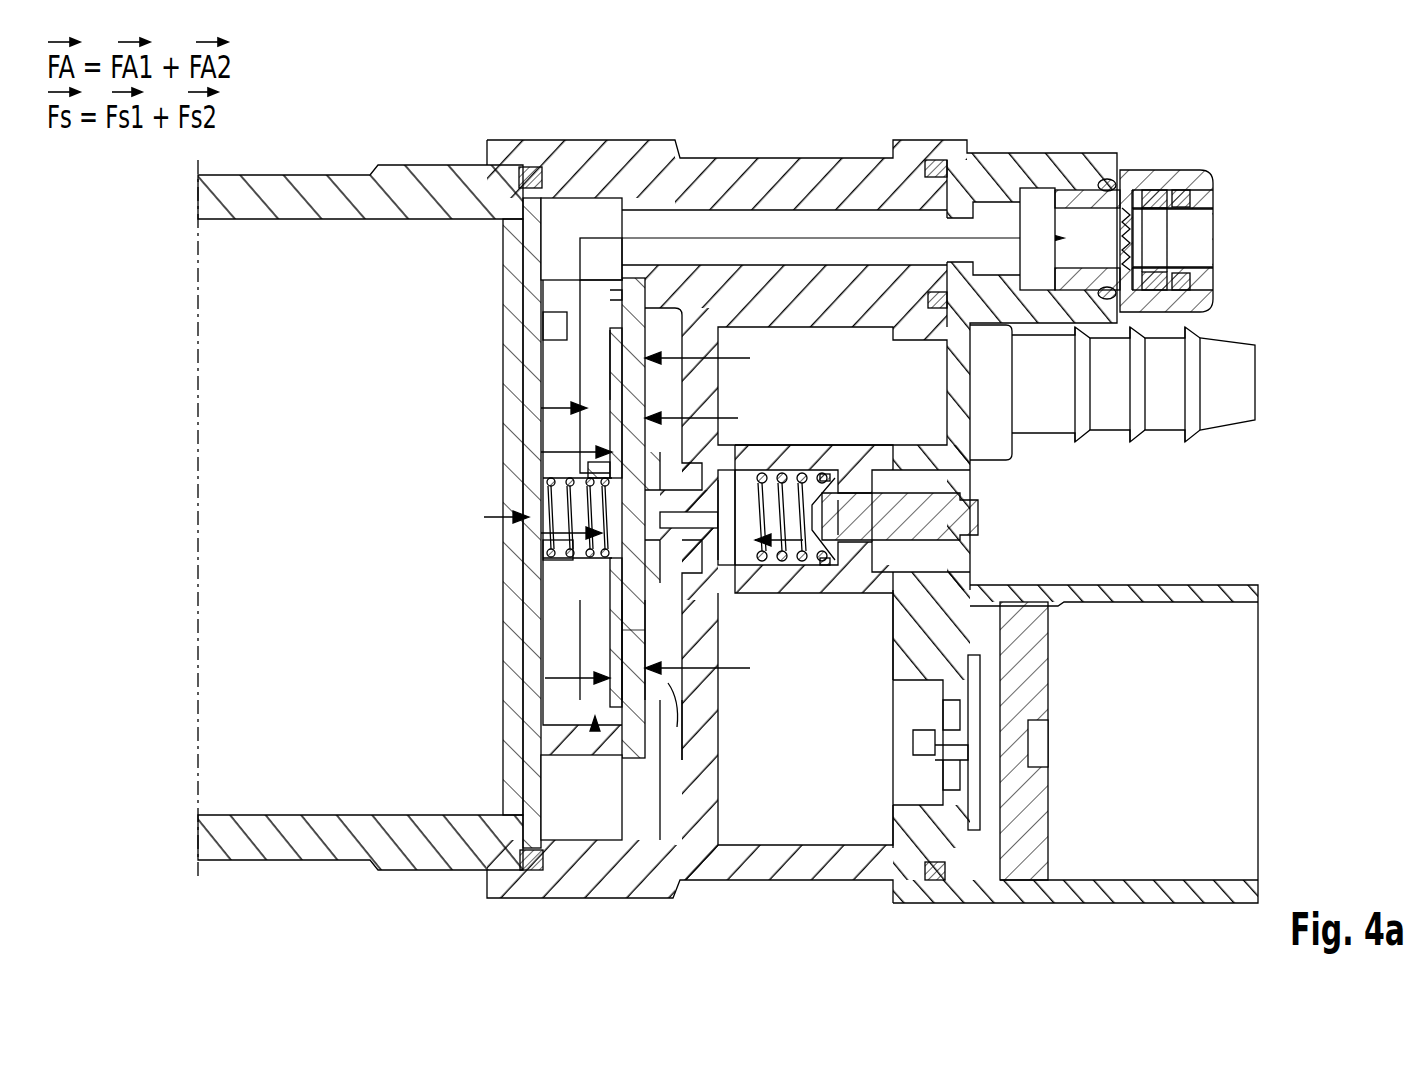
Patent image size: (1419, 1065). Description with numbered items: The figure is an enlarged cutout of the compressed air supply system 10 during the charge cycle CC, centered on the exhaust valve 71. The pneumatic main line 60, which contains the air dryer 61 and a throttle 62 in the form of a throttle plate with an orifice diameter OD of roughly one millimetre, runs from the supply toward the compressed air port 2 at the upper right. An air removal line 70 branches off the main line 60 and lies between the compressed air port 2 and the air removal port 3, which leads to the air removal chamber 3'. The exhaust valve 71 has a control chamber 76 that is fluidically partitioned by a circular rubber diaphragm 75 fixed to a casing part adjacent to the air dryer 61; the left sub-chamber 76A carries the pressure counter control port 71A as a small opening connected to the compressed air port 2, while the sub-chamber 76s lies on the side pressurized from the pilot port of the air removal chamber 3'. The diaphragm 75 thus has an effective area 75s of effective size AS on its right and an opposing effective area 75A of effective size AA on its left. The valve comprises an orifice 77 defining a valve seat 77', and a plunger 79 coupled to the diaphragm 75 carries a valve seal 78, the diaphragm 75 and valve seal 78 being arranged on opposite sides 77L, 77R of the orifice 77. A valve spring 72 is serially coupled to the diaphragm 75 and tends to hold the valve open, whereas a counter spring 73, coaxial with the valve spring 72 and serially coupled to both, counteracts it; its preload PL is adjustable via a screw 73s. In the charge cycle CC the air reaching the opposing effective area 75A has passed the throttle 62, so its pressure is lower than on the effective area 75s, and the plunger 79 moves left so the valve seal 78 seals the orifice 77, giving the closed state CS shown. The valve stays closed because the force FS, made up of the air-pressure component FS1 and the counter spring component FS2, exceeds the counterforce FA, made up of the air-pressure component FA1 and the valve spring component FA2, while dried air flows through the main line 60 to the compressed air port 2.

The compressed air port 2 is at (1197, 237).
The air removal port 3 is at (999, 741).
The air removal chamber 3' is at (802, 531).
The compressed air supply system 10 is at (1045, 123).
The pneumatic main line 60 is at (787, 240).
The air dryer 61 is at (330, 790).
The throttle 62 is at (575, 555).
The air removal line 70 is at (665, 330).
The exhaust valve 71 is at (758, 425).
The pressure counter control port 71A is at (545, 325).
The valve spring 72 is at (560, 562).
The counter spring 73 is at (900, 558).
The screw 73s is at (885, 537).
The diaphragm 75 is at (560, 755).
The opposing effective area of the diaphragm 75A is at (613, 347).
The effective area of the diaphragm 75s is at (667, 700).
The control chamber 76 is at (592, 740).
The sub-chamber of the control chamber 76A is at (600, 690).
The sub-chamber of the control chamber 76s is at (687, 700).
The valve orifice 77 is at (670, 434).
The valve seat 77' is at (599, 648).
The side of the valve orifice 77L is at (600, 680).
The side of the valve orifice 77R is at (720, 688).
The valve seal 78 is at (900, 530).
The plunger 79 is at (605, 560).
The force exerted on the effective area FS is at (738, 415).
The first force component FS1 is at (720, 703).
The second force component FS2 is at (815, 592).
The counterforce exerted on the opposing effective area FA is at (541, 408).
The first counterforce component FA1 is at (541, 452).
The second counterforce component FA2 is at (565, 605).
The orifice diameter of the throttle OD is at (484, 517).
The effective size of the effective area AA is at (590, 728).
The effective size of the opposing effective area AS is at (685, 735).
The closed state of the exhaust valve CS is at (804, 465).
The charge cycle CC is at (1282, 534).
The preload of the counter spring PL is at (835, 513).